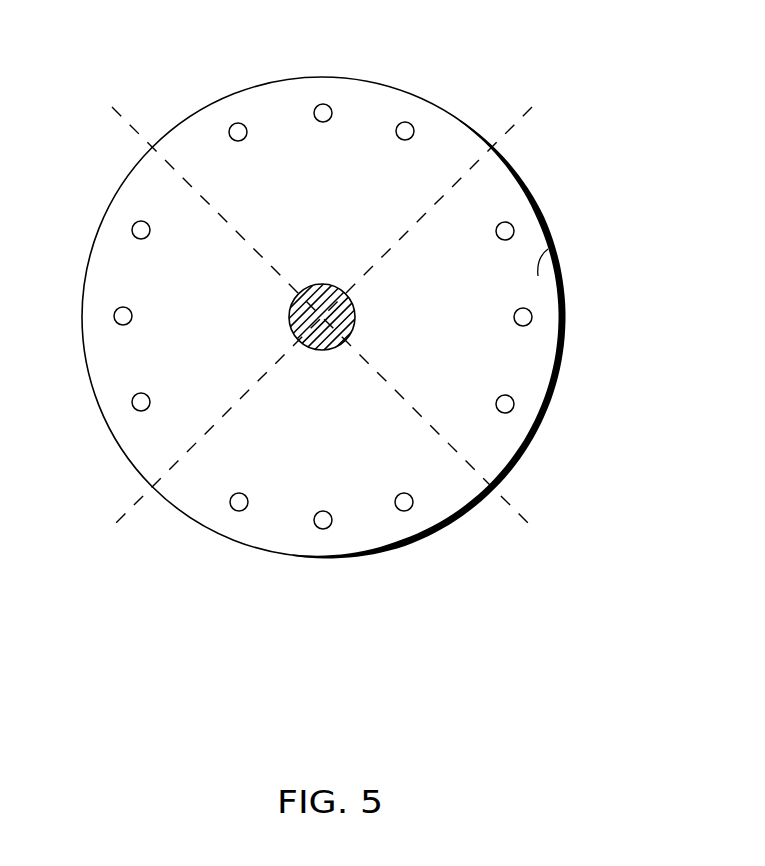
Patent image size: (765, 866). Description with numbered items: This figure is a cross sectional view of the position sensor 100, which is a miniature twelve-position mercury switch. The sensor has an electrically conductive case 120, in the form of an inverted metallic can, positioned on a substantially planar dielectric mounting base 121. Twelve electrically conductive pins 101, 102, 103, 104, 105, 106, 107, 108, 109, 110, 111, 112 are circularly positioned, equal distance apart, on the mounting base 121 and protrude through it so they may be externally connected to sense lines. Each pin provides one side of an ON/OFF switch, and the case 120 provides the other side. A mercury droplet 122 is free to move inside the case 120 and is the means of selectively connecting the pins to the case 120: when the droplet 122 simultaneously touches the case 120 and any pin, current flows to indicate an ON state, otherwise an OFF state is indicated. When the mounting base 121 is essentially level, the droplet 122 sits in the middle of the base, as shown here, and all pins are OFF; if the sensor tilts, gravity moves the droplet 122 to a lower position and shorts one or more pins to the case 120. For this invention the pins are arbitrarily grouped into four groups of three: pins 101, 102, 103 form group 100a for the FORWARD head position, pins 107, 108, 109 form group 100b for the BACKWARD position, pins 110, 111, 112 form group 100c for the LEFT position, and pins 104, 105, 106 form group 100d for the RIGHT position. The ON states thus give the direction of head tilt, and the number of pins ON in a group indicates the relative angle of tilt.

The position sensor 100 is at (590, 497).
The first pin group (FORWARD quadrant) 100a is at (367, 110).
The second pin group (BACKWARD quadrant) 100b is at (265, 538).
The third pin group (LEFT quadrant) 100c is at (107, 363).
The fourth pin group (RIGHT quadrant) 100d is at (500, 186).
The electrically conductive pin 101 is at (236, 123).
The electrically conductive pin 102 is at (324, 104).
The electrically conductive pin 103 is at (410, 122).
The electrically conductive pin 104 is at (514, 229).
The electrically conductive pin 105 is at (532, 317).
The electrically conductive pin 106 is at (514, 407).
The electrically conductive pin 107 is at (412, 506).
The electrically conductive pin 108 is at (323, 529).
The electrically conductive pin 109 is at (230, 505).
The electrically conductive pin 110 is at (133, 406).
The electrically conductive pin 111 is at (114, 317).
The electrically conductive pin 112 is at (133, 225).
The electrically conductive case 120 is at (556, 389).
The mounting base 121 is at (558, 250).
The mercury droplet 122 is at (355, 314).